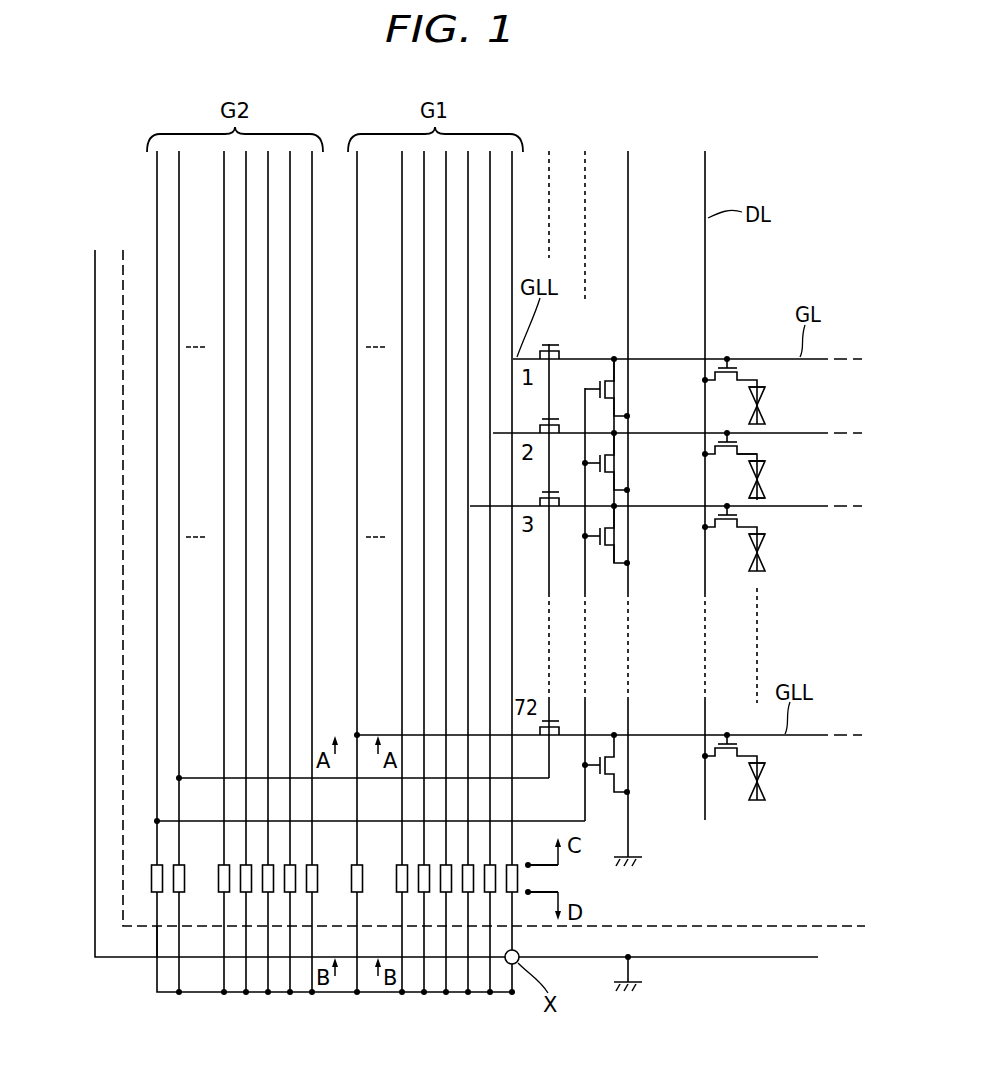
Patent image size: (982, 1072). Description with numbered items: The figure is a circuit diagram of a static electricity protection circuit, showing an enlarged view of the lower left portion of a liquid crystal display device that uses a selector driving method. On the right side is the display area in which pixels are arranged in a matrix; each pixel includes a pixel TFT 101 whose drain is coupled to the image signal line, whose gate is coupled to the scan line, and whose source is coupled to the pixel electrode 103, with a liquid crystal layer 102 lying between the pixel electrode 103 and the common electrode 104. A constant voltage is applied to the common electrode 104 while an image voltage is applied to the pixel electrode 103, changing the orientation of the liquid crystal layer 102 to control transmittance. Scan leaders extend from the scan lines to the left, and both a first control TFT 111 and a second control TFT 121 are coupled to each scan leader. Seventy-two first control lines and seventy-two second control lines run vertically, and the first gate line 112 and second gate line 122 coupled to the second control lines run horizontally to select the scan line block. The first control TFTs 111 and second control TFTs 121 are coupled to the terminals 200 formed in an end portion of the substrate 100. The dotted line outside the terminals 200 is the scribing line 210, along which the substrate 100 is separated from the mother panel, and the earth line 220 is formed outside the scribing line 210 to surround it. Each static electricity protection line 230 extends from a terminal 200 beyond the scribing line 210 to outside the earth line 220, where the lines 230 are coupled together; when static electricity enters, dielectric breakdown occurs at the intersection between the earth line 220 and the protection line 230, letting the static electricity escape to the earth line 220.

The substrate 100 is at (137, 632).
The pixel TFT 101 is at (742, 372).
The liquid crystal layer 102 is at (762, 479).
The pixel electrode 103 is at (757, 453).
The common electrode 104 is at (757, 499).
The first control TFT 111 is at (555, 345).
The first gate line 112 is at (208, 775).
The second control TFT 121 is at (595, 378).
The second gate line 122 is at (513, 820).
The terminal 200 is at (150, 878).
The scribing line 210 is at (695, 927).
The earth line 220 is at (772, 960).
The static electricity protection line 230 is at (156, 942).